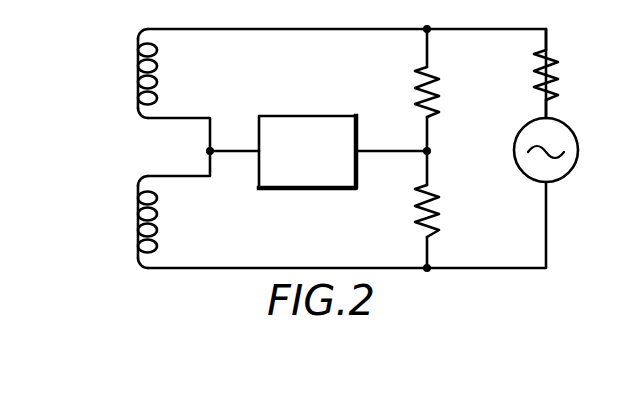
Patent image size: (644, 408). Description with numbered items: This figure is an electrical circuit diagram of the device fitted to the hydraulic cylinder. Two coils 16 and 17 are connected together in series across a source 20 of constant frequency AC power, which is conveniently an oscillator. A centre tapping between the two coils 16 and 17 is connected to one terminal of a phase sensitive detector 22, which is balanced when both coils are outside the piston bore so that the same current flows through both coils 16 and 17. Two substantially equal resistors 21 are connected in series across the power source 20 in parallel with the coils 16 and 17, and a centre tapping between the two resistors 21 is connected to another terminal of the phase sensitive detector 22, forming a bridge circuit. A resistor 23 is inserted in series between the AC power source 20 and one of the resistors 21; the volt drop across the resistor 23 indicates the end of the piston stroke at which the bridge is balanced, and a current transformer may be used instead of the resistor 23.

The coil 16 is at (138, 70).
The coil 17 is at (138, 223).
The source of constant frequency AC power 20 is at (575, 164).
The resistors 21 is at (440, 92).
The phase sensitive detector 22 is at (306, 118).
The resistor 23 is at (556, 71).